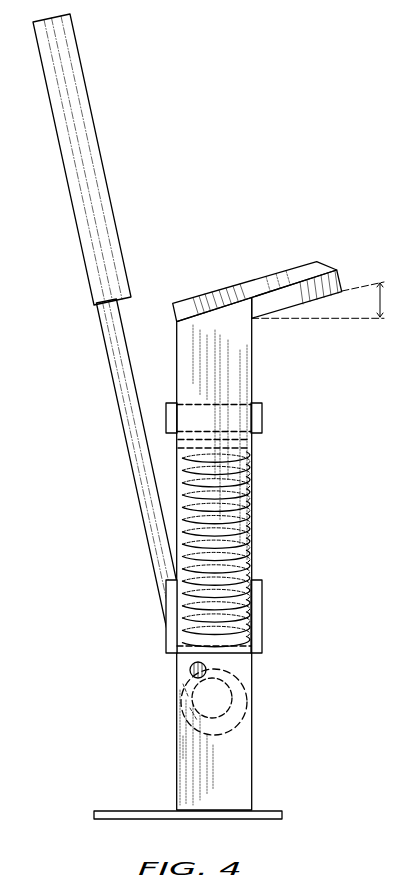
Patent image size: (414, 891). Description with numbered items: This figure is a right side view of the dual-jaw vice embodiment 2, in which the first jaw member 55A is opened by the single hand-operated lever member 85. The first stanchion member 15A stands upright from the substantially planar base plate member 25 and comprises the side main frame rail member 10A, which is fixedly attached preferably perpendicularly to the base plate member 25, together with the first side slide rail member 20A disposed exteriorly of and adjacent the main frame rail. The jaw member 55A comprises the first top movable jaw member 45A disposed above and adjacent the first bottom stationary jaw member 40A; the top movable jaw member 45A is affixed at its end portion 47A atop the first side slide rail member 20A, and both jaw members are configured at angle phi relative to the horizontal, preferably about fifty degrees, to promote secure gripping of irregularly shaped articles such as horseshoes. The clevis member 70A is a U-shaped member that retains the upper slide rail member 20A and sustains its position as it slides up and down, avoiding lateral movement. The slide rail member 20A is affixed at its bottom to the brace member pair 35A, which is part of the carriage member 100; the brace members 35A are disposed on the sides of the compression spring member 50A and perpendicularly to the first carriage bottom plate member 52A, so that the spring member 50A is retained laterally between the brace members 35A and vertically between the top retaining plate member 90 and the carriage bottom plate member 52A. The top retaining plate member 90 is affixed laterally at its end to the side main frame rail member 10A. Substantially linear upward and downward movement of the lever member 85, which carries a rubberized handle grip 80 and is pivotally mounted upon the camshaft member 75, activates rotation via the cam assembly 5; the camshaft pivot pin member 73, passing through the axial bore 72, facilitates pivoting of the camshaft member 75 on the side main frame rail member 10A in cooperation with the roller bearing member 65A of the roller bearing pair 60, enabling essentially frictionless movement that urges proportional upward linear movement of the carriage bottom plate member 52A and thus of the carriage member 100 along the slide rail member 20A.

The dual-jaw vice embodiment 2 is at (176, 166).
The cam assembly 5 is at (187, 737).
The side main frame rail member 10A is at (182, 762).
The first stanchion member 15A is at (222, 554).
The first side slide rail member 20A is at (262, 549).
The base plate member 25 is at (248, 820).
The brace member pair 35A is at (170, 625).
The first bottom stationary jaw member 40A is at (265, 308).
The first top movable jaw member 45A is at (258, 280).
The end portion 47A is at (242, 313).
The compression spring member 50A is at (250, 560).
The first carriage bottom plate member 52A is at (203, 656).
The first jaw member 55A is at (282, 285).
The roller bearing pair 60 is at (256, 710).
The roller bearing member 65A is at (242, 728).
The clevis member 70A is at (257, 413).
The axial bore 72 is at (188, 687).
The camshaft pivot pin member 73 is at (207, 666).
The camshaft member 75 is at (195, 714).
The handle grip 80 is at (82, 217).
The hand-operated lever member 85 is at (142, 463).
The top retaining plate member 90 is at (251, 443).
The carriage member 100 is at (140, 543).